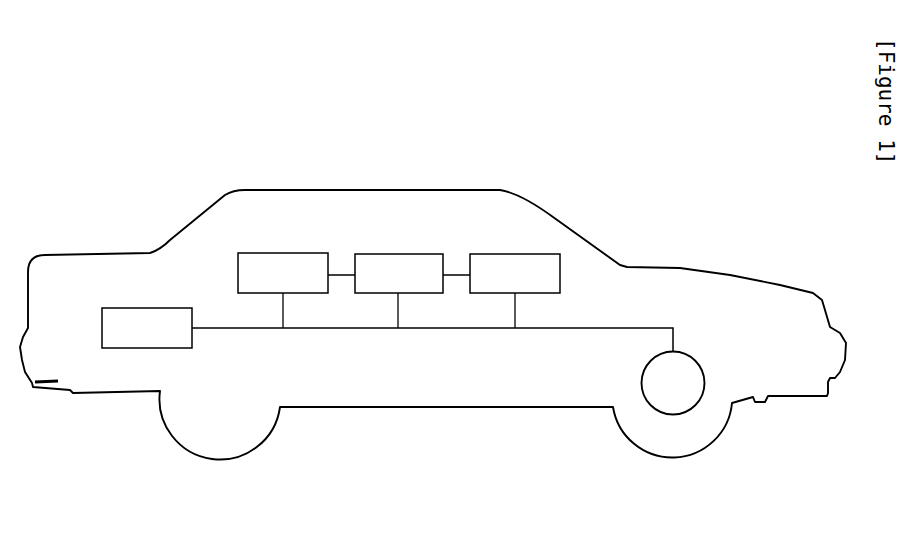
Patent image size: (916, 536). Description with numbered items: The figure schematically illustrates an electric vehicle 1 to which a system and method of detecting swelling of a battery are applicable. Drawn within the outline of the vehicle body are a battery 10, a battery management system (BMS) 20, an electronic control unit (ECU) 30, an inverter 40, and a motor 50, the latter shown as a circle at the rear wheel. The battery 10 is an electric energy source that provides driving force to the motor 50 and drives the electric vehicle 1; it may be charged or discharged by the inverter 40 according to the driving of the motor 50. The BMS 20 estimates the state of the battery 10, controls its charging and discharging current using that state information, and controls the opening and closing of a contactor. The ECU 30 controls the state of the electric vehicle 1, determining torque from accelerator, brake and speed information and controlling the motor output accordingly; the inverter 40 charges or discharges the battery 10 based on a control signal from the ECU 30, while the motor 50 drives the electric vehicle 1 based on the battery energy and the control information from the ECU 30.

The electric vehicle 1 is at (483, 190).
The battery 10 is at (172, 308).
The battery management system (BMS) 20 is at (298, 253).
The electronic control unit (ECU) 30 is at (417, 254).
The inverter 40 is at (533, 254).
The motor 50 is at (697, 362).